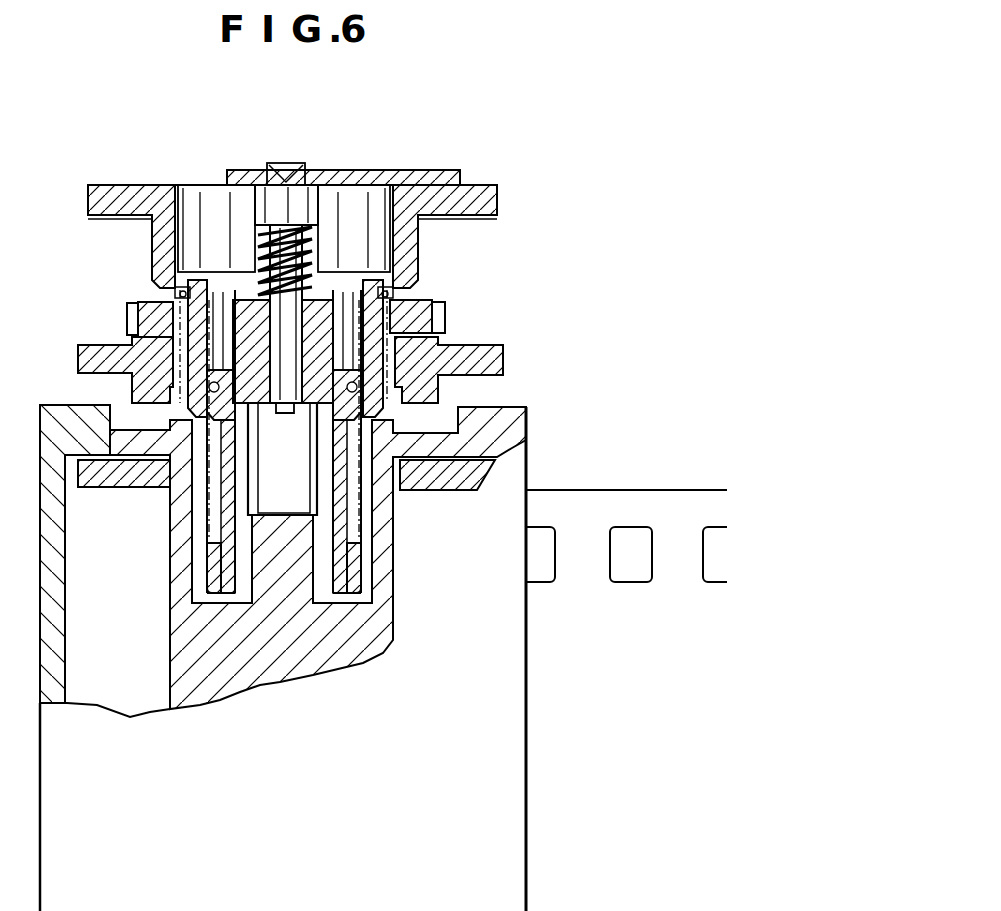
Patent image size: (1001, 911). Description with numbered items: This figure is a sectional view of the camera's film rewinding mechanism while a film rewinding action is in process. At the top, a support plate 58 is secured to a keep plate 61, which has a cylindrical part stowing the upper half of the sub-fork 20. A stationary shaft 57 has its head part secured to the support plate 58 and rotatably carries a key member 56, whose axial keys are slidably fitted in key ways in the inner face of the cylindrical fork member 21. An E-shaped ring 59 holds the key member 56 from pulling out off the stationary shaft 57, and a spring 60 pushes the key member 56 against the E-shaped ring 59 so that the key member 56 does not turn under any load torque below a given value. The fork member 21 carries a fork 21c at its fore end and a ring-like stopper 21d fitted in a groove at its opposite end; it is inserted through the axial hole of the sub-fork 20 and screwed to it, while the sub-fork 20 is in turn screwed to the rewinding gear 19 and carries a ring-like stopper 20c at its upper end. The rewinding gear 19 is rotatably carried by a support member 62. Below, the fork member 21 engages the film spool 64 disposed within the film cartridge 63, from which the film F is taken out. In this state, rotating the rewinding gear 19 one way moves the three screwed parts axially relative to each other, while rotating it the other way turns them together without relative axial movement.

The support plate 58 is at (436, 182).
The keep plate 61 is at (116, 200).
The key member 56 is at (242, 305).
The spring 60 is at (306, 252).
The stationary shaft 57 is at (302, 345).
The E-shaped ring 59 is at (300, 411).
The fork member 21 is at (228, 475).
The fork 21c is at (347, 557).
The ring-like stopper 21d is at (190, 407).
The rewinding gear 19 is at (147, 313).
The sub-fork 20 is at (388, 314).
The ring-like stopper 20c is at (160, 280).
The support member 62 is at (97, 353).
The film cartridge 63 is at (56, 427).
The film spool 64 is at (99, 473).
The film F is at (592, 514).